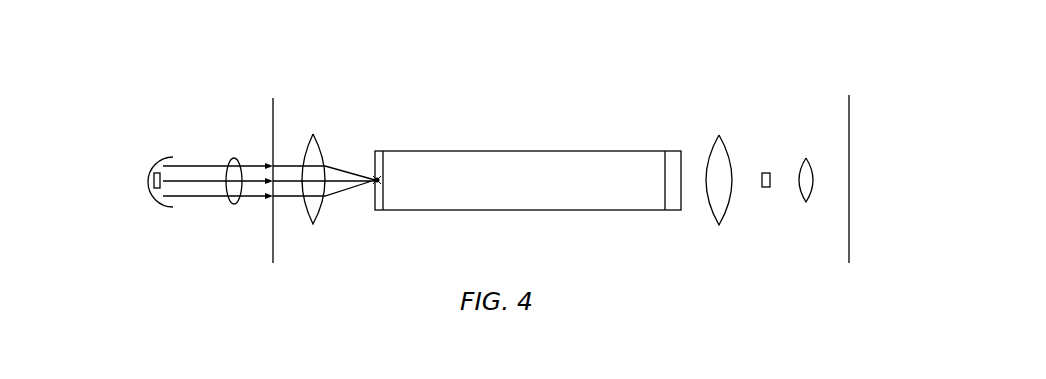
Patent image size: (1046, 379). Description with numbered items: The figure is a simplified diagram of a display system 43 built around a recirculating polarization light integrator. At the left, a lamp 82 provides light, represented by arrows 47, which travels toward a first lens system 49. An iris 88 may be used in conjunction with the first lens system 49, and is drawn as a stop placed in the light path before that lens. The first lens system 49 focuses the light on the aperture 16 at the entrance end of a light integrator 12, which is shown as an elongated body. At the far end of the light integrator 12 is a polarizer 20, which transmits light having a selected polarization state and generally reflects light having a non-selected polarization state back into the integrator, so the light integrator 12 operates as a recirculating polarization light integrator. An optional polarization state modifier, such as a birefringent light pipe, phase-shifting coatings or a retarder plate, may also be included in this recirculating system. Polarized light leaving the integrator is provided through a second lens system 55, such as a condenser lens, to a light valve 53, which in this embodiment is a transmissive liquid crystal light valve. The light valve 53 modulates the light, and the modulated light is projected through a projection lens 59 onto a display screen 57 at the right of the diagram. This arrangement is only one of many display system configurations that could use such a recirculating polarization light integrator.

The light integrator 12 is at (527, 148).
The aperture 16 is at (379, 182).
The polarizer 20 is at (673, 148).
The display system 43 is at (298, 88).
The arrows 47 is at (236, 203).
The first lens system 49 is at (323, 205).
The light valve 53 is at (765, 172).
The second lens system 55 is at (730, 207).
The display screen 57 is at (850, 117).
The projection lens 59 is at (813, 193).
The lamp 82 is at (141, 164).
The iris 88 is at (273, 130).